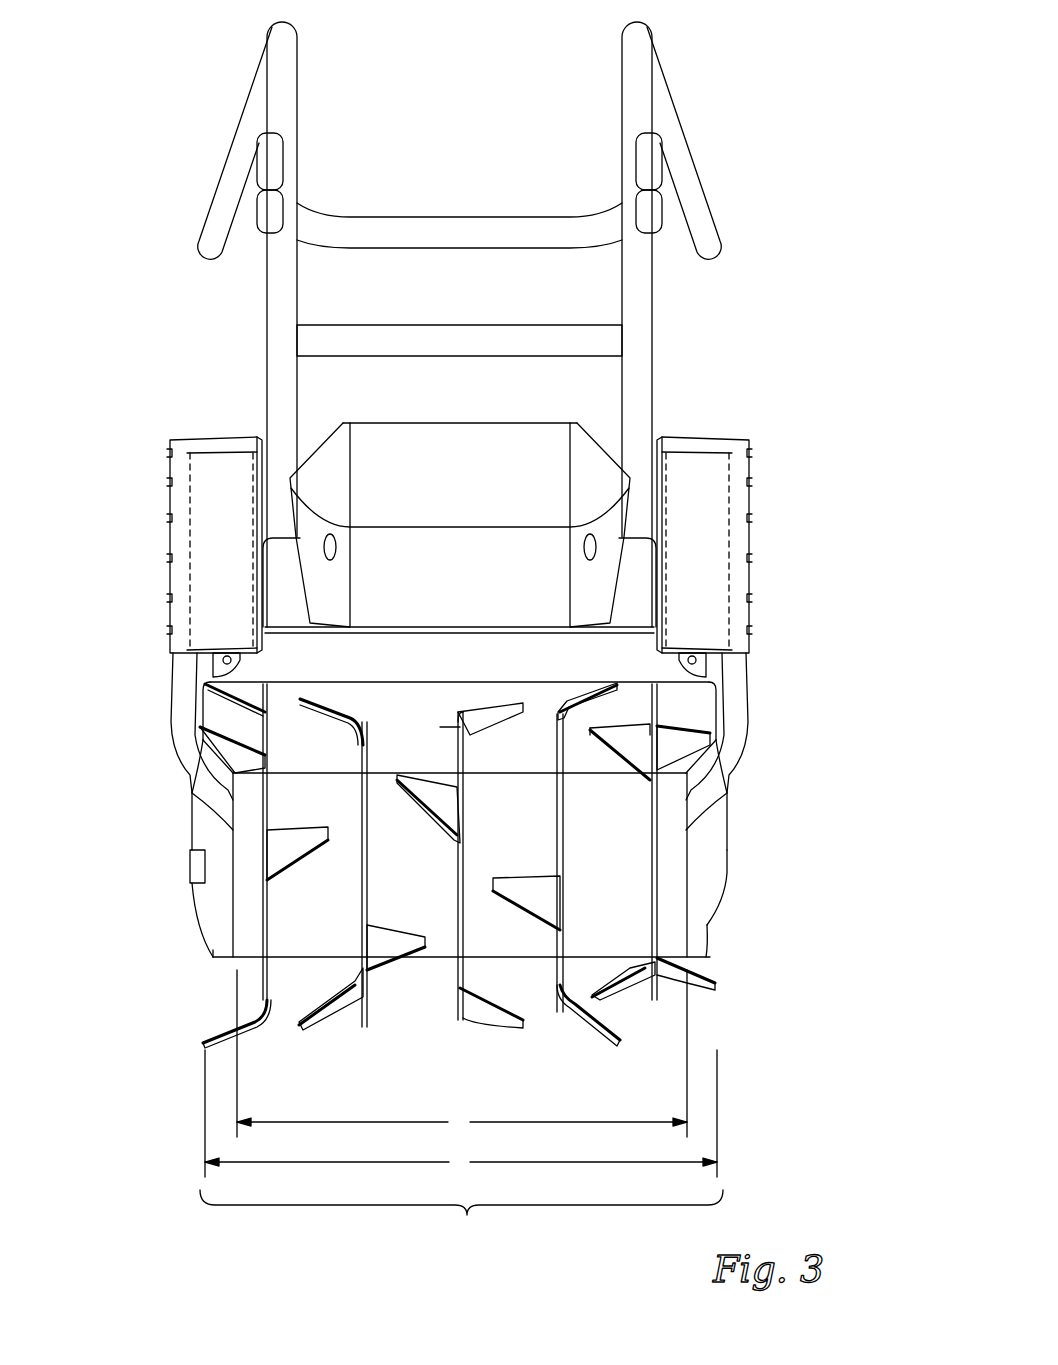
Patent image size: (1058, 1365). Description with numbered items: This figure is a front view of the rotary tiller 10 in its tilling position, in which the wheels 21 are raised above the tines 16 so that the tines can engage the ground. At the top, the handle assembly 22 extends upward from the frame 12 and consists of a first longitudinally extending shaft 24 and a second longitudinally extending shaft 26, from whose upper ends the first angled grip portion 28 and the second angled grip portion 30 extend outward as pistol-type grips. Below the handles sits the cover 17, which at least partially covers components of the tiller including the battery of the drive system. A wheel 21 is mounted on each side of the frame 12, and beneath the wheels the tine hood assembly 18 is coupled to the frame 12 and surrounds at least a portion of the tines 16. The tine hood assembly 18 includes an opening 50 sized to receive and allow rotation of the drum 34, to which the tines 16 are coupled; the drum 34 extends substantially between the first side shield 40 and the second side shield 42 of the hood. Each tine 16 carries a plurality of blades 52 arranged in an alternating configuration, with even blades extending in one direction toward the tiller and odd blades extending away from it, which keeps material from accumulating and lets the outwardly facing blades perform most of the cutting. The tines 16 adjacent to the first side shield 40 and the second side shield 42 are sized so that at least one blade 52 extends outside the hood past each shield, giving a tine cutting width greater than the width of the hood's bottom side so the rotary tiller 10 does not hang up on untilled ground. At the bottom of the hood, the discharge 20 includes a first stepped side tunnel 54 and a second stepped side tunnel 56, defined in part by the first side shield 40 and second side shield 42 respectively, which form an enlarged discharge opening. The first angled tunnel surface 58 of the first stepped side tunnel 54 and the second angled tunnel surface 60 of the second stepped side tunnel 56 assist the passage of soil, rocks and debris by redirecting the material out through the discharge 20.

The rotary tiller 10 is at (798, 37).
The frame 12 is at (273, 565).
The tines 16 is at (461, 965).
The cover 17 is at (458, 428).
The tine hood assembly 18 is at (767, 692).
The discharge 20 is at (455, 637).
The wheels 21 is at (198, 583).
The handle assembly 22 is at (252, 88).
The first longitudinally extending shaft 24 is at (643, 382).
The second longitudinally extending shaft 26 is at (273, 380).
The first angled grip portion 28 is at (709, 203).
The second angled grip portion 30 is at (210, 203).
The drum 34 is at (283, 812).
The first side shield 40 is at (713, 923).
The second side shield 42 is at (207, 923).
The opening 50 is at (630, 873).
The blades 52 is at (500, 707).
The first stepped side tunnel 54 is at (700, 720).
The second stepped side tunnel 56 is at (217, 718).
The first angled tunnel surface 58 is at (712, 767).
The second angled tunnel surface 60 is at (207, 767).